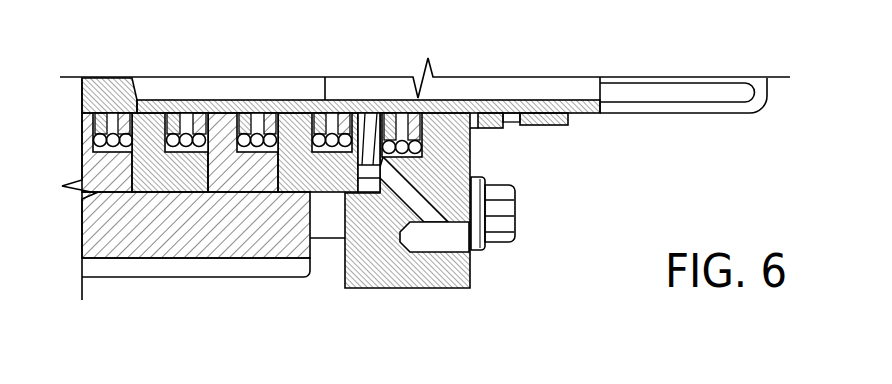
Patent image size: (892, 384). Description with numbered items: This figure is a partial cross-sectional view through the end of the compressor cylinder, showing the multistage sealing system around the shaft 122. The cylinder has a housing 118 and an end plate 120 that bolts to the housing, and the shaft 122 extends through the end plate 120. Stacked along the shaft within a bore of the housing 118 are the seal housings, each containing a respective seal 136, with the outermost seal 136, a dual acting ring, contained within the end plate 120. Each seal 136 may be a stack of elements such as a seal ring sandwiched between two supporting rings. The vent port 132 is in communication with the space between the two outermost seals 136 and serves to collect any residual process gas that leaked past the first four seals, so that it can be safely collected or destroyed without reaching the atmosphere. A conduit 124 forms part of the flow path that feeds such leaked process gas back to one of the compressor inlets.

The housing 118 is at (177, 277).
The end plate 120 is at (390, 288).
The shaft 122 is at (600, 90).
The conduit 124 is at (728, 113).
The vent port 132 is at (448, 245).
The seal 136 is at (185, 108).